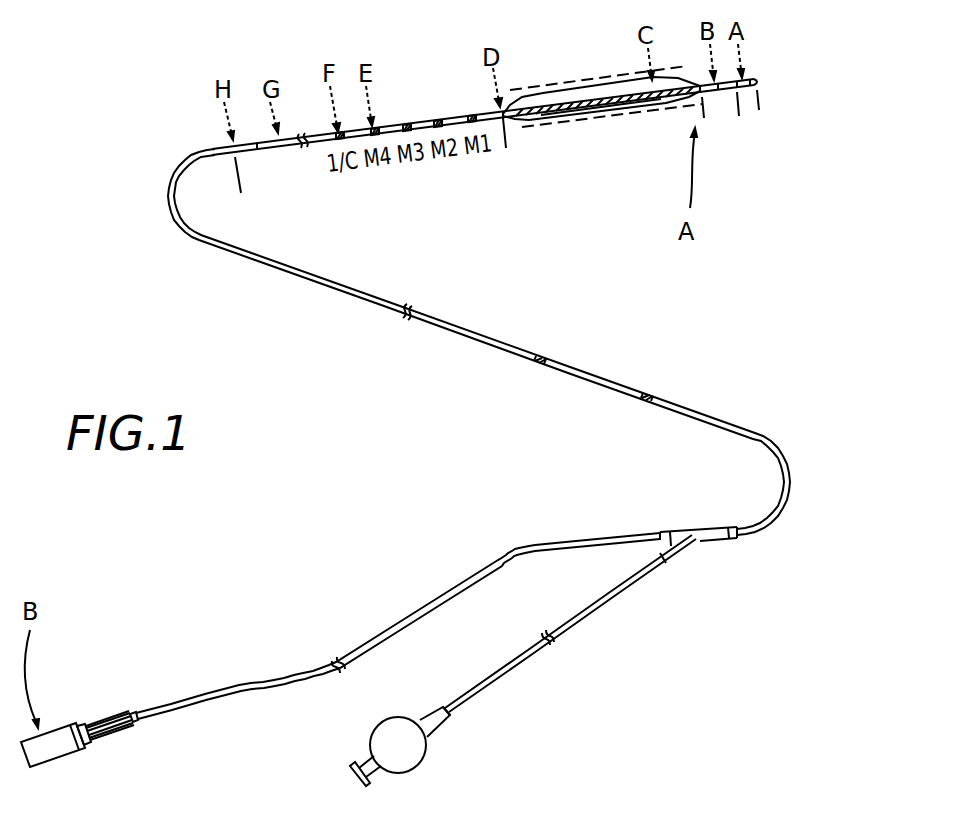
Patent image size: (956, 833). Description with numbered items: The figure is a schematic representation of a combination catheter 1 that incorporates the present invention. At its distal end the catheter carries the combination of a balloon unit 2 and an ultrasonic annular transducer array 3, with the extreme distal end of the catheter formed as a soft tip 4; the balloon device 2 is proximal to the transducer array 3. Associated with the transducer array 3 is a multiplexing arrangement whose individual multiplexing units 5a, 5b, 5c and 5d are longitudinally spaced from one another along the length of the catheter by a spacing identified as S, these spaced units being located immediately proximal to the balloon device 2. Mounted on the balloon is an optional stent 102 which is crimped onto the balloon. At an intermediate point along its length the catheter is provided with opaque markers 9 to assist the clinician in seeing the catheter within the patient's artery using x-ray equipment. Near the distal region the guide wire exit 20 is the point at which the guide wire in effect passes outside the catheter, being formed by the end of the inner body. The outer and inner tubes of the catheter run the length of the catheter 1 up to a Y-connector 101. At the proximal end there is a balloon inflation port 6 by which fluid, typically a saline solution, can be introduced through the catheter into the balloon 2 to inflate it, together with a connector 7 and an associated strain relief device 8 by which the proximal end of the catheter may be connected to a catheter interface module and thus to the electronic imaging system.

The catheter 1 is at (378, 328).
The balloon unit 2 is at (584, 88).
The ultrasonic annular transducer array 3 is at (722, 96).
The soft tip 4 is at (746, 96).
The multiplexing unit 5a is at (470, 120).
The multiplexing unit 5b is at (440, 122).
The multiplexing unit 5c is at (406, 128).
The multiplexing unit 5d is at (376, 128).
The balloon inflation port 6 is at (407, 752).
The connector 7 is at (113, 730).
The strain relief device 8 is at (54, 750).
The opaque markers 9 is at (540, 358).
The guide wire exit 20 is at (207, 150).
The Y-connector 101 is at (703, 544).
The stent 102 is at (597, 116).